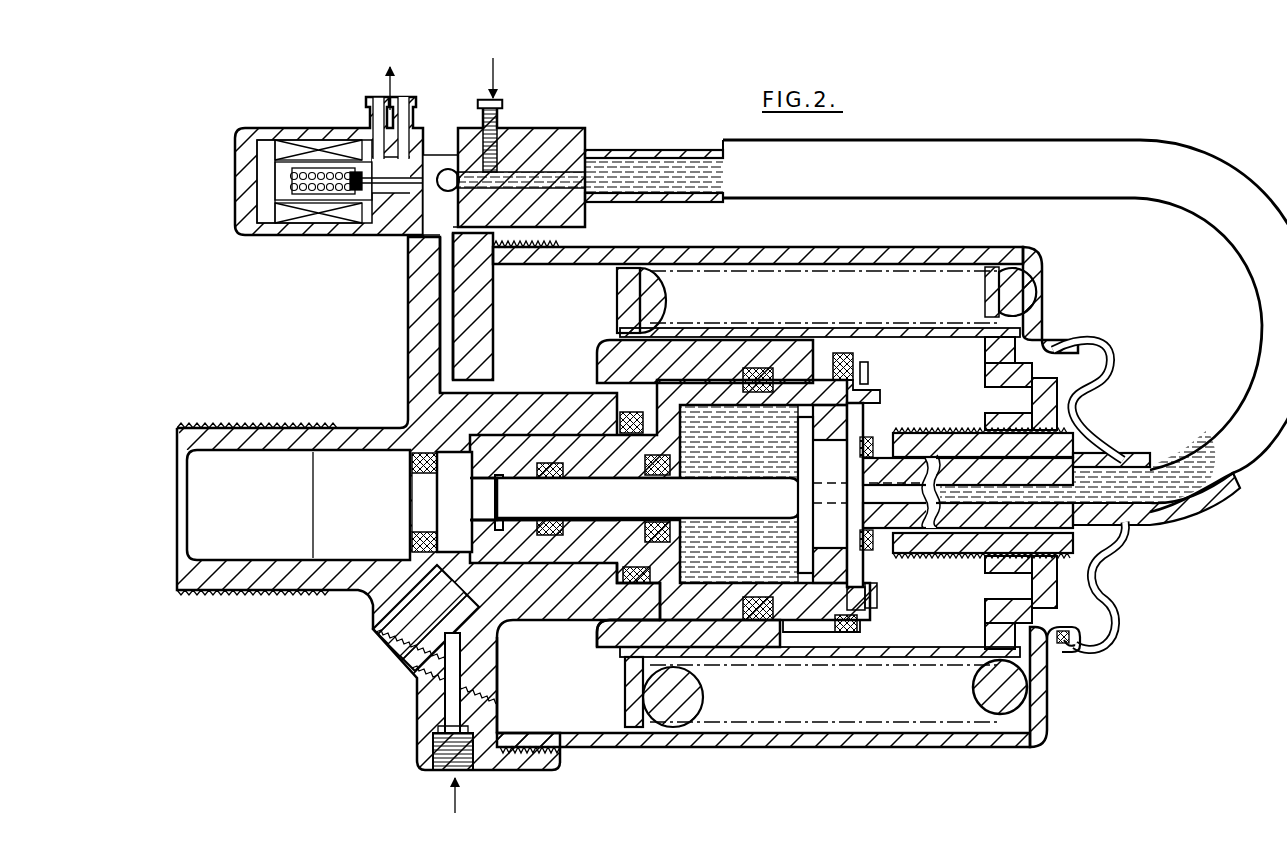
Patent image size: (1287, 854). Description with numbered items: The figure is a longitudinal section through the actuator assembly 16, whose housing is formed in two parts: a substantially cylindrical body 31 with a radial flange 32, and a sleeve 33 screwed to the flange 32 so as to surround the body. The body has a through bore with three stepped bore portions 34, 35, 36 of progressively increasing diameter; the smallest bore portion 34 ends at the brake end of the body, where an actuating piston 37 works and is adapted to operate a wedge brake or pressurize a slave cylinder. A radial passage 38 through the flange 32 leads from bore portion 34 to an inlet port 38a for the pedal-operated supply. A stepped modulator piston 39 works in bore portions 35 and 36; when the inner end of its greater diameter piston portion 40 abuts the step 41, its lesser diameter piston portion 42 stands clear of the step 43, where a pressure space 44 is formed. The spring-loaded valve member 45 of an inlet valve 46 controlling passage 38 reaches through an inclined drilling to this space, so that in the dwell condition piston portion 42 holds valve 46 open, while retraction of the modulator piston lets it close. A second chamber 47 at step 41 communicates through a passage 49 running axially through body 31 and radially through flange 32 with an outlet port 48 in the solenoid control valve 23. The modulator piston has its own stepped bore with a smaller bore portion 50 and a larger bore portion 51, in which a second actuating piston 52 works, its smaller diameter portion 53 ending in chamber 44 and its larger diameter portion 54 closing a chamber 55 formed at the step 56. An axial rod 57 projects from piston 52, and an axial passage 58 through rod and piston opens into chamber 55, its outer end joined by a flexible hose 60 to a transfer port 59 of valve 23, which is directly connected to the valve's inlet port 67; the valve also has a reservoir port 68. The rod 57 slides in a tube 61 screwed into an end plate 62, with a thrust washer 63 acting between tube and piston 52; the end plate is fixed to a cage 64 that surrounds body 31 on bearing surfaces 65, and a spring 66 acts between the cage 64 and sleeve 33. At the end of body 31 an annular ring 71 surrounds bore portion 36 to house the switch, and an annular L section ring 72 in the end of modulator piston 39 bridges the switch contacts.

The actuator assembly 16 is at (1125, 608).
The solenoid control valve 23 is at (442, 94).
The body 31 is at (353, 428).
The radial flange 32 is at (410, 307).
The sleeve 33 is at (1024, 289).
The bore portion 34 is at (377, 450).
The bore portion 35 is at (553, 437).
The bore portion 36 is at (745, 380).
The actuating piston 37 is at (360, 509).
The radial passage 38 is at (445, 690).
The inlet port 38a is at (436, 745).
The modulator piston 39 is at (882, 393).
The piston portion 40 is at (727, 622).
The step 41 is at (627, 630).
The piston portion 42 is at (573, 560).
The step 43 is at (477, 452).
The pressure space 44 is at (480, 437).
The valve member 45 is at (486, 575).
The inlet valve 46 is at (376, 667).
The second chamber 47 is at (664, 378).
The outlet port 48 is at (412, 240).
The passage 49 is at (440, 278).
The bore portion 50 is at (603, 480).
The bore portion 51 is at (800, 410).
The second actuating piston 52 is at (868, 415).
The smaller diameter portion 53 is at (693, 504).
The larger diameter portion 54 is at (866, 575).
The chamber 55 is at (785, 630).
The step 56 is at (718, 380).
The axial rod 57 is at (1123, 518).
The axial passage 58 is at (1095, 450).
The transfer port 59 is at (583, 148).
The flexible hose 60 is at (1273, 302).
The tube 61 is at (1113, 542).
The end plate 62 is at (1052, 650).
The thrust washer 63 is at (880, 556).
The cage 64 is at (1048, 678).
The bearing surfaces 65 is at (842, 637).
The spring 66 is at (986, 680).
The inlet port 67 is at (512, 94).
The reservoir port 68 is at (388, 115).
The annular ring 71 is at (846, 353).
The annular L section ring 72 is at (885, 353).